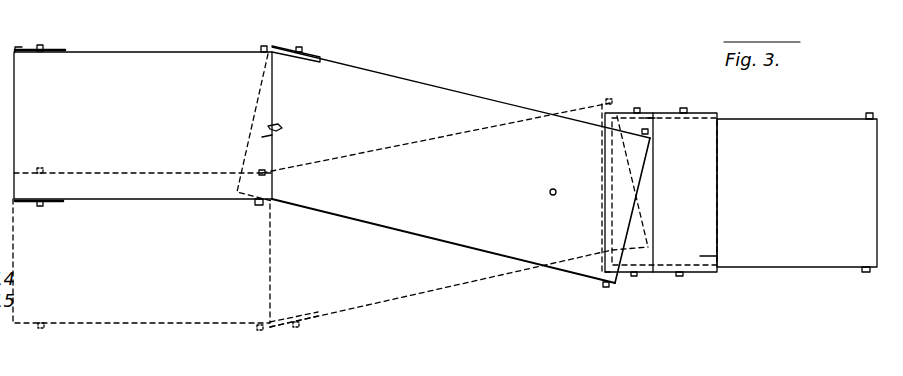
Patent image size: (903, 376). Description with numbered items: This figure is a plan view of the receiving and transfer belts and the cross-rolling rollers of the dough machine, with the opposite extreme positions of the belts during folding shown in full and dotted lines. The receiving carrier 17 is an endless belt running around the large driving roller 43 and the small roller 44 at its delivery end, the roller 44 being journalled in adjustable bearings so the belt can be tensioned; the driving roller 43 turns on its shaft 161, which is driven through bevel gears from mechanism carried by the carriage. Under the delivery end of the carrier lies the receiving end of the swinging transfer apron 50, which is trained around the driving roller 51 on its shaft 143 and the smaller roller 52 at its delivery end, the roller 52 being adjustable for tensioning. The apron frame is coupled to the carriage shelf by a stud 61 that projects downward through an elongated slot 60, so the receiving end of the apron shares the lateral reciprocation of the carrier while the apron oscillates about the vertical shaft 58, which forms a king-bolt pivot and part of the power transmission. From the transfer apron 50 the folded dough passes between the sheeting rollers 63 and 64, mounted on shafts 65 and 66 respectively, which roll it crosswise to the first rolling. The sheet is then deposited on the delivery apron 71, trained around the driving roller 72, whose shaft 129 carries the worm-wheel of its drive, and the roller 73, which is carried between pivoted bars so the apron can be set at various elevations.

The receiving carrier 17 is at (124, 58).
The large driving roller 43 is at (22, 49).
The shaft of the driving roller 161 is at (43, 47).
The small roller 44 is at (261, 50).
The driving roller 51 is at (320, 59).
The shaft of the driving roller 143 is at (299, 49).
The transfer apron 50 is at (410, 87).
The slot 60 is at (258, 138).
The stud 61 is at (284, 127).
The roller 52 is at (604, 100).
The vertical shaft 58 is at (549, 192).
The sheeting roller 63 is at (628, 273).
The sheeting roller 64 is at (704, 257).
The shaft 65 is at (637, 108).
The shaft of the driving roller 129 is at (652, 117).
The shaft 66 is at (687, 110).
The roller 72 is at (666, 274).
The delivery apron 71 is at (792, 258).
The roller 73 is at (862, 273).